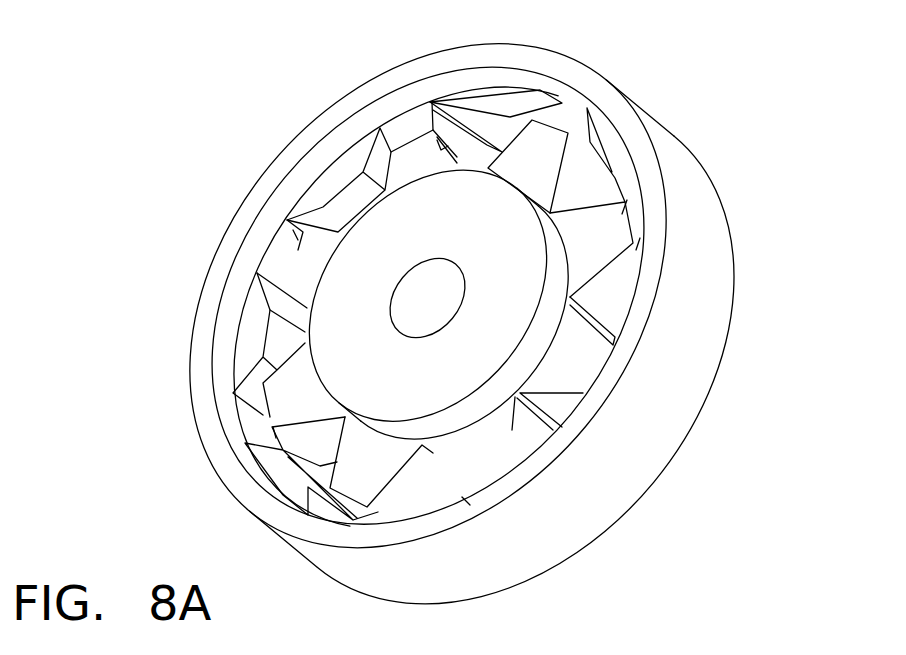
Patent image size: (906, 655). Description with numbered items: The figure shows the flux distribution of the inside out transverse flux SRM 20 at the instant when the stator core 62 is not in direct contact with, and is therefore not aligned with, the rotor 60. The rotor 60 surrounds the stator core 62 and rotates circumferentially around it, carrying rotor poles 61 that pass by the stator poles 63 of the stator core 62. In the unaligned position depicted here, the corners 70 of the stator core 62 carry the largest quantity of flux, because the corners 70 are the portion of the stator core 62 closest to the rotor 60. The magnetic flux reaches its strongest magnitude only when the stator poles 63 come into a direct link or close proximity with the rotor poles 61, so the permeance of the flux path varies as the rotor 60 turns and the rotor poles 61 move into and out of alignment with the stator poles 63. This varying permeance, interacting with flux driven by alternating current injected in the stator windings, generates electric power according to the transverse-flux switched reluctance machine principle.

The inside out transverse flux SRM 20 is at (212, 66).
The rotor 60 is at (718, 310).
The rotor poles 61 is at (607, 143).
The stator core 62 is at (474, 216).
The stator poles 63 is at (547, 169).
The corners 70 is at (437, 140).